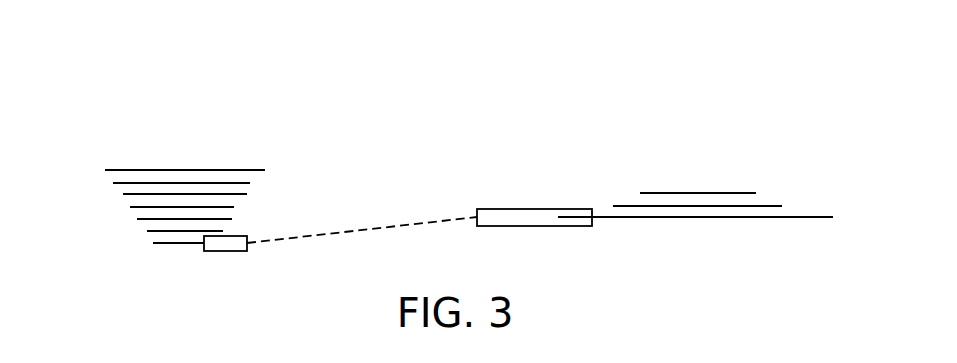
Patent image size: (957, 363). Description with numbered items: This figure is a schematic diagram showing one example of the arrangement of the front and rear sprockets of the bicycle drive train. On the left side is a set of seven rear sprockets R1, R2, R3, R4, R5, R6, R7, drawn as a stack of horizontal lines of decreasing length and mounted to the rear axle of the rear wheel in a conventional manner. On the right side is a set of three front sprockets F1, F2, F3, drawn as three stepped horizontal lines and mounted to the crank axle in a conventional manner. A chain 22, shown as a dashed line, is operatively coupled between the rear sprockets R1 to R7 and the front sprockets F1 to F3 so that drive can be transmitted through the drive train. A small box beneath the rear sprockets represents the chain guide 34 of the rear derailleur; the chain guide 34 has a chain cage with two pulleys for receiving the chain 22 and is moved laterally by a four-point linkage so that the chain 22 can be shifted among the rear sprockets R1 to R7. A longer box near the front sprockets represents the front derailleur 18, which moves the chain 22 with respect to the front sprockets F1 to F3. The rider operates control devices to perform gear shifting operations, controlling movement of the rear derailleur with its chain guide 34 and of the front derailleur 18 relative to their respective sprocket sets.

The rear sprocket R1 is at (224, 170).
The rear sprocket R2 is at (249, 183).
The rear sprocket R3 is at (125, 194).
The rear sprocket R4 is at (233, 207).
The rear sprocket R5 is at (145, 219).
The rear sprocket R6 is at (152, 232).
The rear sprocket R7 is at (168, 245).
The chain guide 34 is at (232, 251).
The chain 22 is at (399, 226).
The front derailleur 18 is at (541, 197).
The front sprocket F1 is at (672, 193).
The front sprocket F2 is at (767, 206).
The front sprocket F3 is at (805, 217).